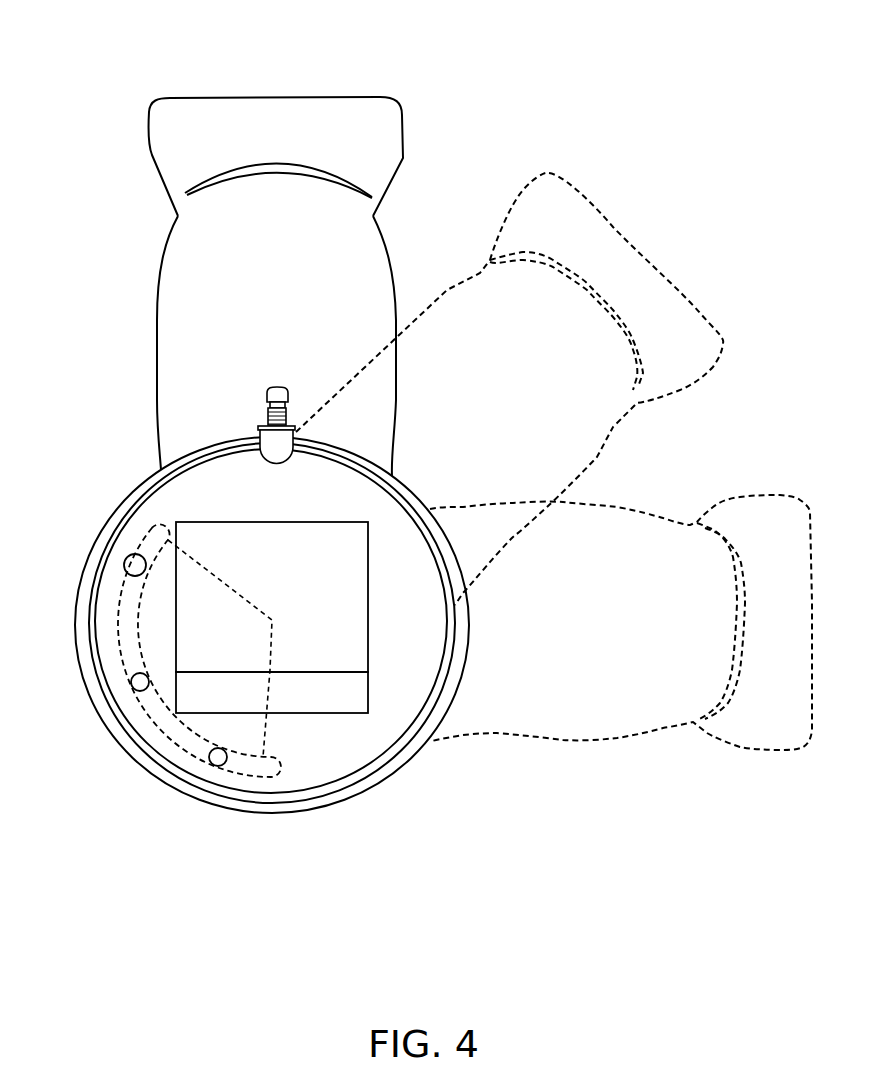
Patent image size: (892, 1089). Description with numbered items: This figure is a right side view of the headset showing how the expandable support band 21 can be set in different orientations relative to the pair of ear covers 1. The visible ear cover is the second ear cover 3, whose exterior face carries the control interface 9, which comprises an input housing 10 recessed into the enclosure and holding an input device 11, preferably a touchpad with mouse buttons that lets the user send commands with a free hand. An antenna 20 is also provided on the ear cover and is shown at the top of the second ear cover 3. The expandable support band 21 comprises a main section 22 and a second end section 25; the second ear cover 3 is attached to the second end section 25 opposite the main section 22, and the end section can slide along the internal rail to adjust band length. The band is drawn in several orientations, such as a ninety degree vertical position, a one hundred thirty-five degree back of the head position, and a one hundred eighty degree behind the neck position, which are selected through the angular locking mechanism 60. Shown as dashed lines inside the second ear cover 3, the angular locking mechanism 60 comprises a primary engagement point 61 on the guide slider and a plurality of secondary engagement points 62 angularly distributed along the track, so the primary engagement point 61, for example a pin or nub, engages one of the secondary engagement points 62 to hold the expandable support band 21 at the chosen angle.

The pair of ear covers 1 is at (283, 845).
The second ear cover 3 is at (403, 717).
The control interface 9 is at (285, 506).
The input housing 10 is at (237, 520).
The input device 11 is at (362, 617).
The antenna 20 is at (281, 390).
The expandable support band 21 is at (307, 68).
The main section 22 is at (390, 137).
The second end section 25 is at (190, 302).
The angular locking mechanism 60 is at (165, 753).
The primary engagement point 61 is at (137, 559).
The secondary engagement points 62 is at (137, 685).